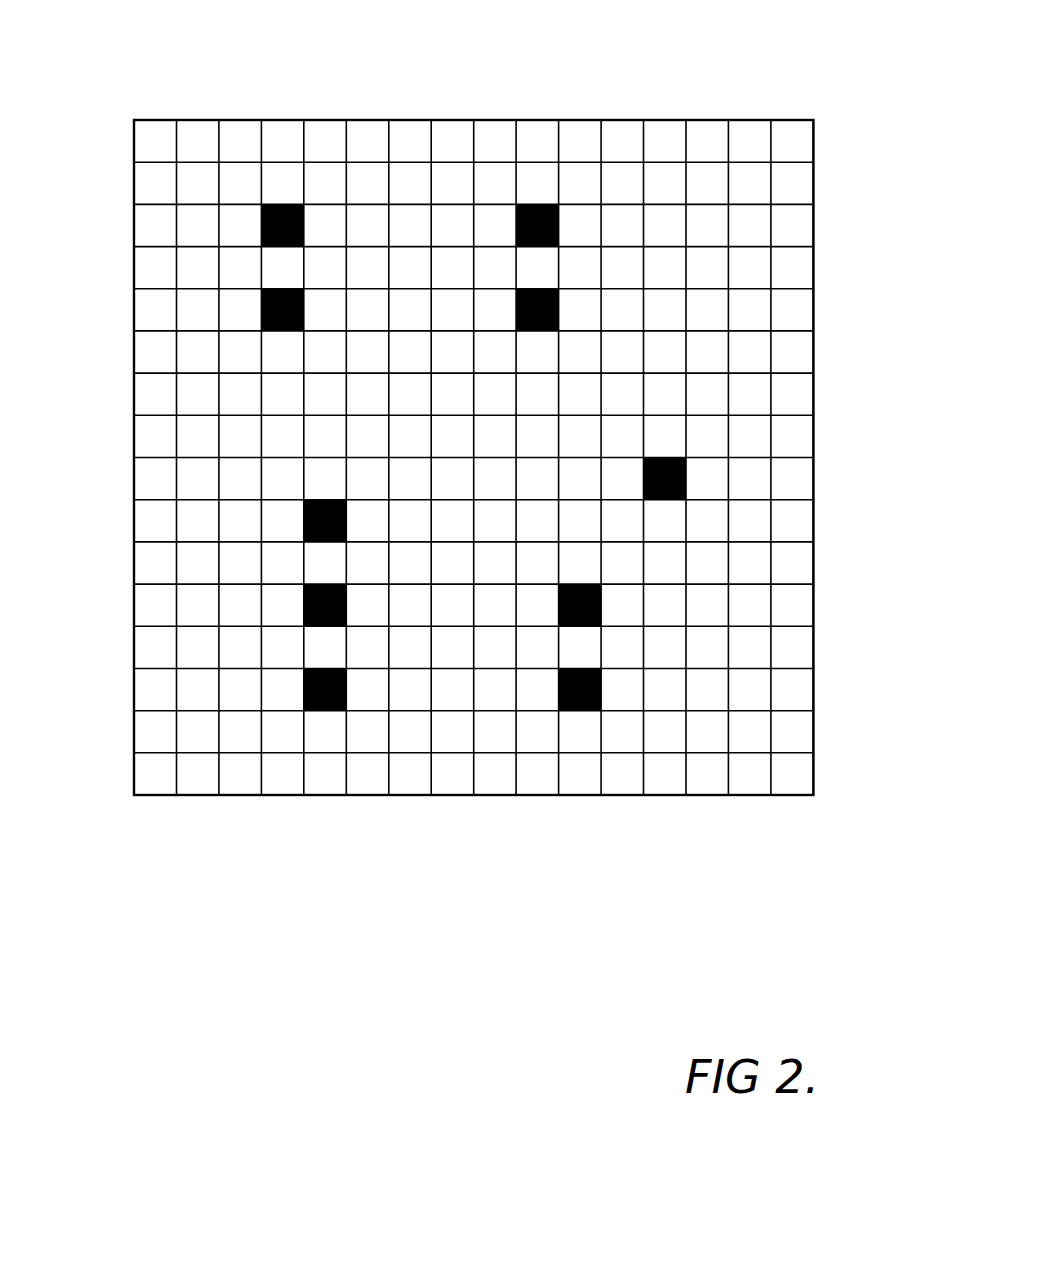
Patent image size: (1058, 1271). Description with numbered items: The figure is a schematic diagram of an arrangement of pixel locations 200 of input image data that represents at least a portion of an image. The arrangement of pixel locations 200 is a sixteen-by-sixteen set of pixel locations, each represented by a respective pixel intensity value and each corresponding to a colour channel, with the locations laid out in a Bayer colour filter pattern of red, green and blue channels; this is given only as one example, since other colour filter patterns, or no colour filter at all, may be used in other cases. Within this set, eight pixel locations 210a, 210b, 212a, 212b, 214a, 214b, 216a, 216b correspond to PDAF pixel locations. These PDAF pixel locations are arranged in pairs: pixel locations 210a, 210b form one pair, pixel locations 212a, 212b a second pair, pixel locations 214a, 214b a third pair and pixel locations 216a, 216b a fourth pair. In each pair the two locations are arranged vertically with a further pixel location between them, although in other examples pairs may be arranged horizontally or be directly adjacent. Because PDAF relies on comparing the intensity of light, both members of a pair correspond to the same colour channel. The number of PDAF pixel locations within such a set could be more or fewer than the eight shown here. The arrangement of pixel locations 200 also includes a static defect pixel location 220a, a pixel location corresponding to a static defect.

The arrangement of pixel locations 200 is at (723, 82).
The pixel location 210a is at (292, 203).
The pixel location 210b is at (261, 323).
The pixel location 212a is at (540, 203).
The pixel location 212b is at (559, 322).
The pixel location 214a is at (304, 610).
The pixel location 214b is at (339, 711).
The pixel location 216a is at (601, 613).
The pixel location 216b is at (593, 711).
The static defect pixel location 220a is at (686, 490).